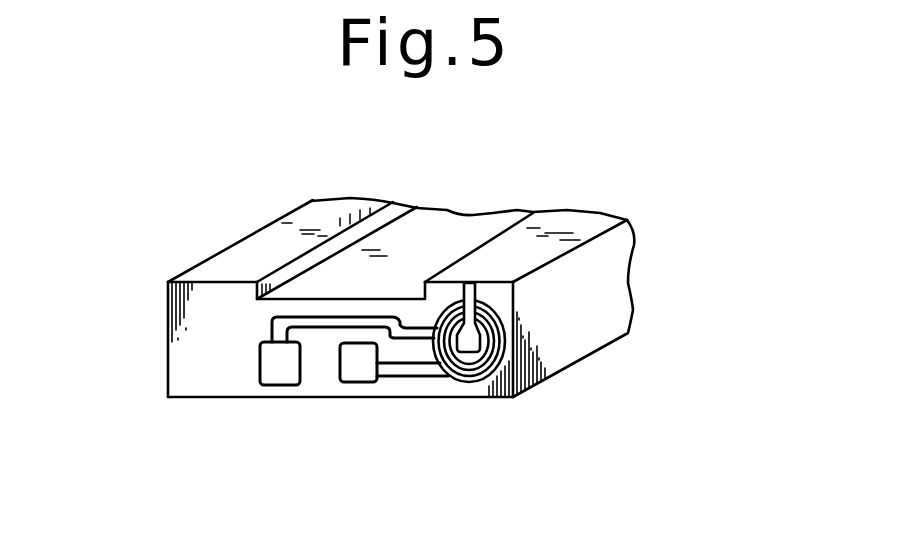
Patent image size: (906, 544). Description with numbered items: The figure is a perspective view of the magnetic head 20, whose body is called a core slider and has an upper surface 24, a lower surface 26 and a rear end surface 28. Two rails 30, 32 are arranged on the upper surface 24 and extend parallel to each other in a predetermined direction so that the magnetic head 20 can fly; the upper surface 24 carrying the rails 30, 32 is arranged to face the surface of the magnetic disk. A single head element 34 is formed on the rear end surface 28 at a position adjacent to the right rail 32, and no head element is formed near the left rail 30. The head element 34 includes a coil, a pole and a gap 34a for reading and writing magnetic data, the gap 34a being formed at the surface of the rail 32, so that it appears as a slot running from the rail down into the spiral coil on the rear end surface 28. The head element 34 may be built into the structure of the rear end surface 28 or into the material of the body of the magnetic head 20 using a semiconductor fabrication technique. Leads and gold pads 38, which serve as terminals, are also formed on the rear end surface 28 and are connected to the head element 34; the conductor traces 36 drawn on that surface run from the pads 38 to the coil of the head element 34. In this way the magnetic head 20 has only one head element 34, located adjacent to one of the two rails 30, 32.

The magnetic head 20 is at (606, 205).
The upper surface 24 is at (288, 293).
The lower surface 26 is at (335, 398).
The rear end surface 28 is at (188, 373).
The rail 30 is at (243, 250).
The rail 32 is at (633, 242).
The head element 34 is at (472, 380).
The gap 34a is at (467, 284).
The conductor traces 36 is at (412, 368).
The gold pads 38 is at (345, 365).